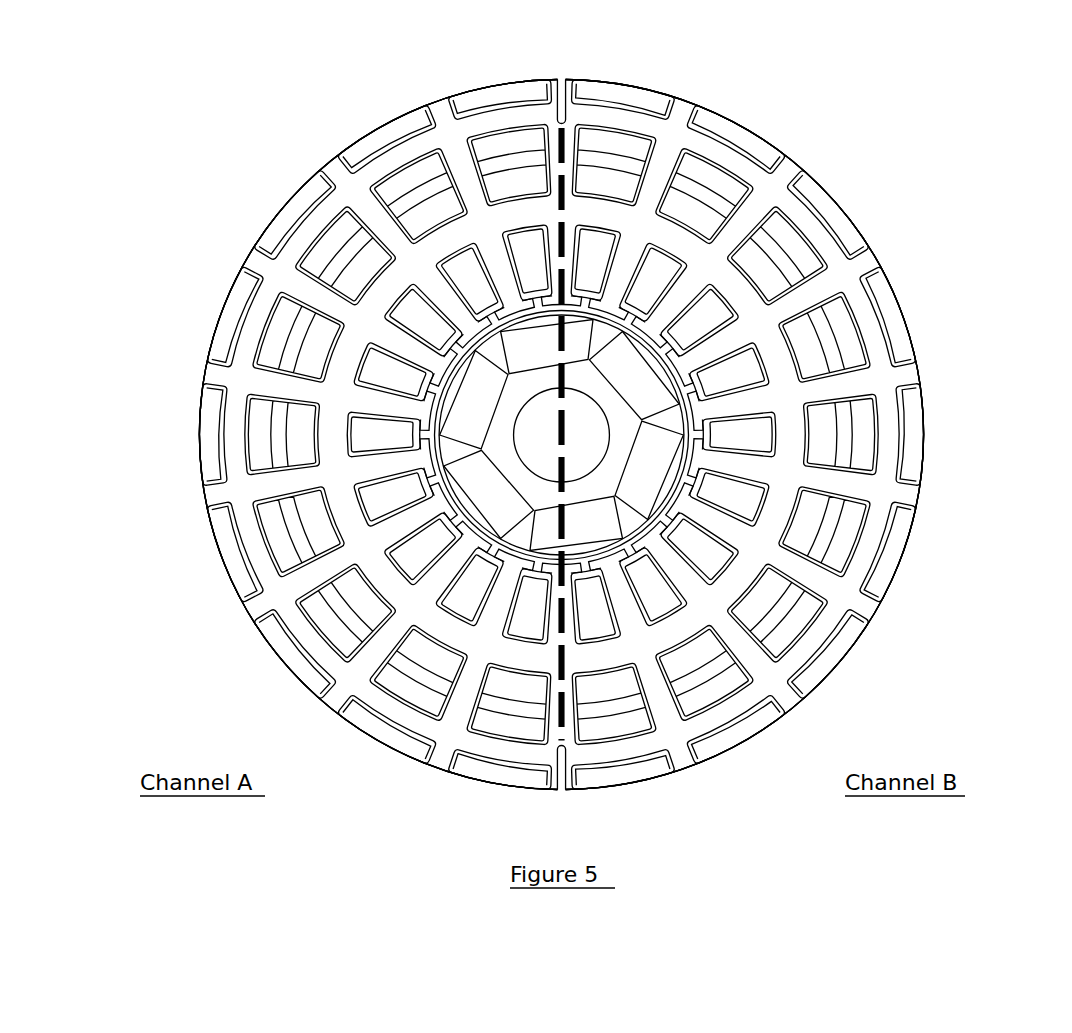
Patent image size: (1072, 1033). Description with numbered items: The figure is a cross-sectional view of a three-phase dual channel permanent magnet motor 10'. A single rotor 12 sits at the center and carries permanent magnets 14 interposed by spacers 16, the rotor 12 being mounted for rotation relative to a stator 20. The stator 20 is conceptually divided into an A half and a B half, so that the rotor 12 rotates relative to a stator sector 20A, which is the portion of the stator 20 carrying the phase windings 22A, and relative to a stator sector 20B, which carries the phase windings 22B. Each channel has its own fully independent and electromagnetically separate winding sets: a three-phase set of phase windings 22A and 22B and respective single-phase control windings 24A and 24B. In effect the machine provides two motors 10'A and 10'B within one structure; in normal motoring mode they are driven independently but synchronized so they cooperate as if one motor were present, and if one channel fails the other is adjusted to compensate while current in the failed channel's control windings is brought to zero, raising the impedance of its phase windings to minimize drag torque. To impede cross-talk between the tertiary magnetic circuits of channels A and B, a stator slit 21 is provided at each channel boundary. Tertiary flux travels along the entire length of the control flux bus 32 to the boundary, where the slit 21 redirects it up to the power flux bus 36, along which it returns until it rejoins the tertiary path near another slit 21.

The dual channel PM motor 10' is at (621, 435).
The motor of channel A 10'A is at (378, 459).
The motor of channel B 10'B is at (745, 454).
The rotor 12 is at (660, 349).
The permanent magnets 14 is at (656, 372).
The spacers 16 is at (679, 418).
The stator 20 is at (178, 148).
The stator sector A 20A is at (228, 252).
The stator sector B 20B is at (911, 572).
The stator slit 21 is at (556, 77).
The phase windings of channel A 22A is at (410, 312).
The phase windings of channel B 22B is at (720, 549).
The control windings of channel A 24A is at (258, 352).
The control windings of channel B 24B is at (747, 675).
The control flux bus 32 is at (902, 431).
The power flux bus 36 is at (770, 532).